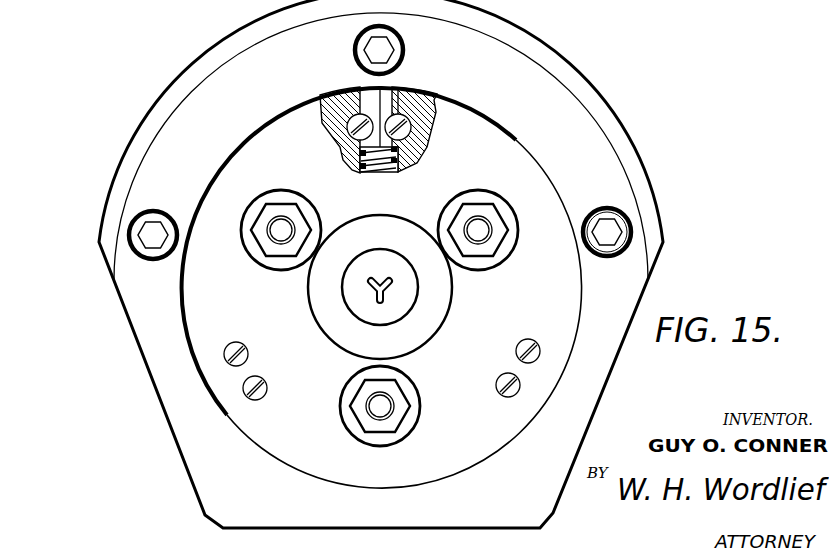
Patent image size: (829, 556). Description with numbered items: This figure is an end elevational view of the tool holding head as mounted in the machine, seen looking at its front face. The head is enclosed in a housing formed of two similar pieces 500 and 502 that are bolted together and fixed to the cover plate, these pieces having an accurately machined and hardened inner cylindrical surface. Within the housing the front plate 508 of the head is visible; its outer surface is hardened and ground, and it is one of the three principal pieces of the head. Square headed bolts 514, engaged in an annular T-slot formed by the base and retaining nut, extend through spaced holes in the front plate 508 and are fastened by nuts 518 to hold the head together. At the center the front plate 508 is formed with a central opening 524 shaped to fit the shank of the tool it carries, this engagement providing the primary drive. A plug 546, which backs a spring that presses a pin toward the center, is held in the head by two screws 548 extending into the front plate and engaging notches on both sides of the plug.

The housing piece 500 is at (228, 52).
The housing piece 502 is at (205, 127).
The front plate 508 is at (528, 305).
The square headed bolts 514 is at (488, 250).
The nuts 518 is at (482, 238).
The central opening 524 is at (370, 292).
The plug 546 is at (375, 105).
The screws 548 is at (352, 128).